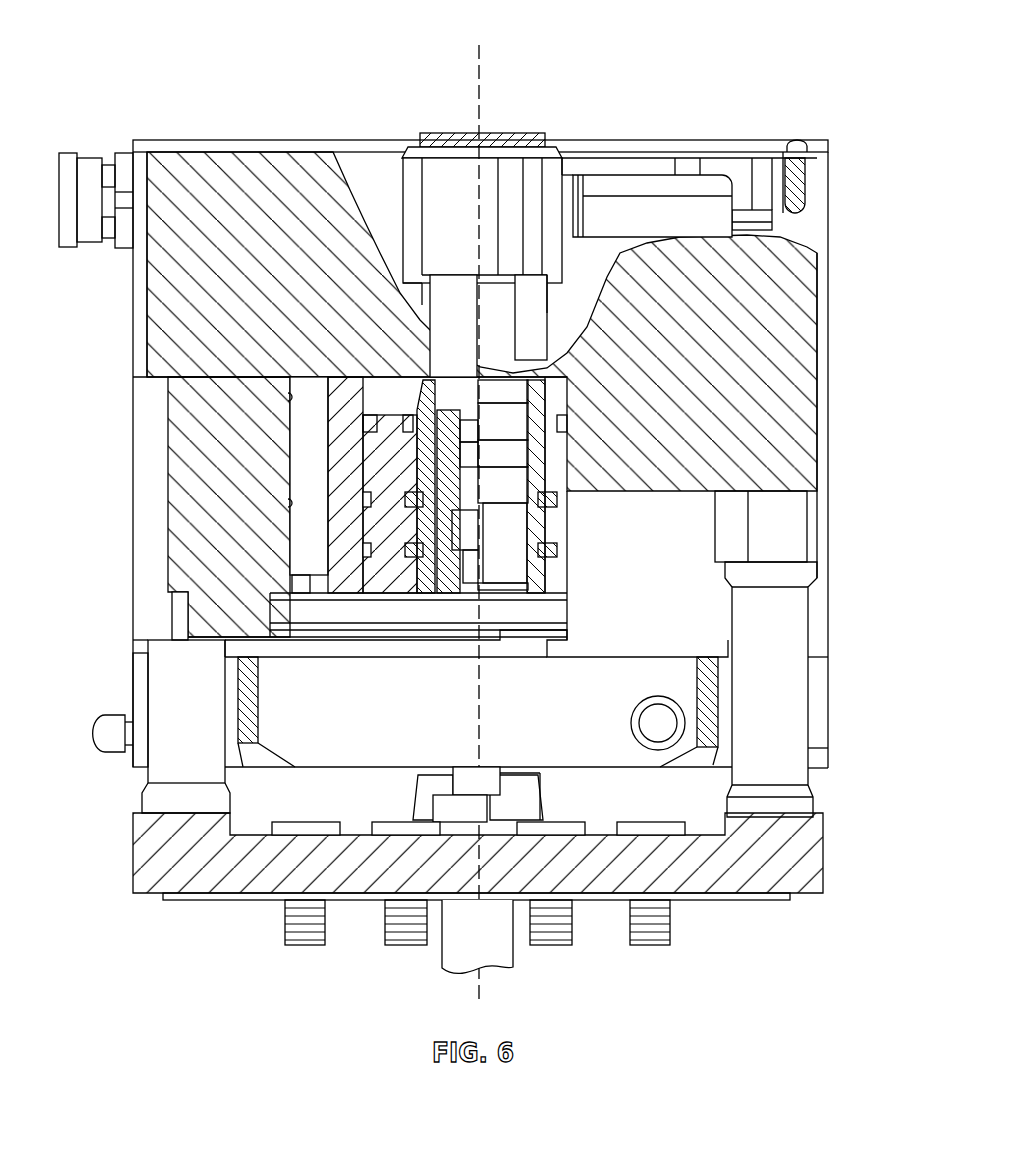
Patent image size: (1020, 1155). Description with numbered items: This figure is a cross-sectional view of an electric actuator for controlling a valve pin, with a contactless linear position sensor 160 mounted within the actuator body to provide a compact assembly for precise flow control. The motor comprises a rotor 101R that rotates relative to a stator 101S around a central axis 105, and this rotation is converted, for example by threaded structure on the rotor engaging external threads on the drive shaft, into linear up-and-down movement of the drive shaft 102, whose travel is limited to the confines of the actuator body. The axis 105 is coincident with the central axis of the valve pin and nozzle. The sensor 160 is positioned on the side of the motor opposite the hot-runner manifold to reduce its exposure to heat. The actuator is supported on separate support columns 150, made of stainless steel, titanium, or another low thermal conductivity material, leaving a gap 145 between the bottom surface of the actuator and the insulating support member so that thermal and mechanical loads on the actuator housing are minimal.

The axis 105 is at (484, 74).
The linear position sensor 160 is at (594, 198).
The rotor 101R is at (343, 523).
The stator 101S is at (207, 497).
The drive shaft 102 is at (423, 570).
The support columns 150 is at (787, 698).
The gap 145 is at (693, 805).